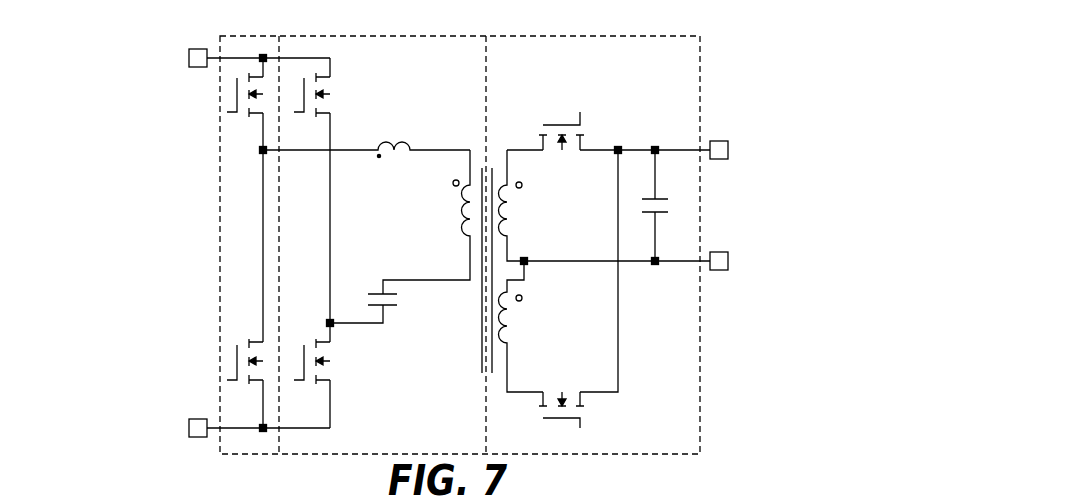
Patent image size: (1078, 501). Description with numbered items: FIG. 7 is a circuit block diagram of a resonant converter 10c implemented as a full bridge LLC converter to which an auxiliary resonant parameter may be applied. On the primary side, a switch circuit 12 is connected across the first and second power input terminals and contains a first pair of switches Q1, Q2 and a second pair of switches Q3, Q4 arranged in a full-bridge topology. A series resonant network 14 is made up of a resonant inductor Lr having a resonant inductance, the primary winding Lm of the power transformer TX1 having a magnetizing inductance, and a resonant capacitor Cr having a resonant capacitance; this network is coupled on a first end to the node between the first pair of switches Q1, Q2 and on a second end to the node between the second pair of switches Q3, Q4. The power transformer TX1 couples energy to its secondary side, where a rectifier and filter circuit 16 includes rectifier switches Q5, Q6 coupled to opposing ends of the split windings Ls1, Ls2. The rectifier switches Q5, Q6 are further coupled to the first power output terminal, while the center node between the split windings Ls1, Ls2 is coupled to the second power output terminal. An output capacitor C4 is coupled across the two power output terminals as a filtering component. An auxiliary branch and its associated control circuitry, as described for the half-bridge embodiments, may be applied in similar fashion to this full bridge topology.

The resonant converter 10c is at (106, 51).
The switch circuit 12 is at (247, 35).
The series resonant network 14 is at (408, 35).
The rectifier and filter circuit 16 is at (575, 35).
The first switch Q1 is at (245, 104).
The second switch Q2 is at (245, 289).
The switch of second pair Q3 is at (312, 104).
The switch of second pair Q4 is at (312, 289).
The rectifier switch Q5 is at (608, 125).
The rectifier switch Q6 is at (563, 289).
The resonant inductor Lr is at (366, 162).
The primary winding Lm is at (426, 222).
The resonant capacitor Cr is at (363, 304).
The power transformer TX1 is at (488, 249).
The split winding Ls1 is at (605, 205).
The split winding Ls2 is at (525, 326).
The output capacitor C4 is at (668, 205).